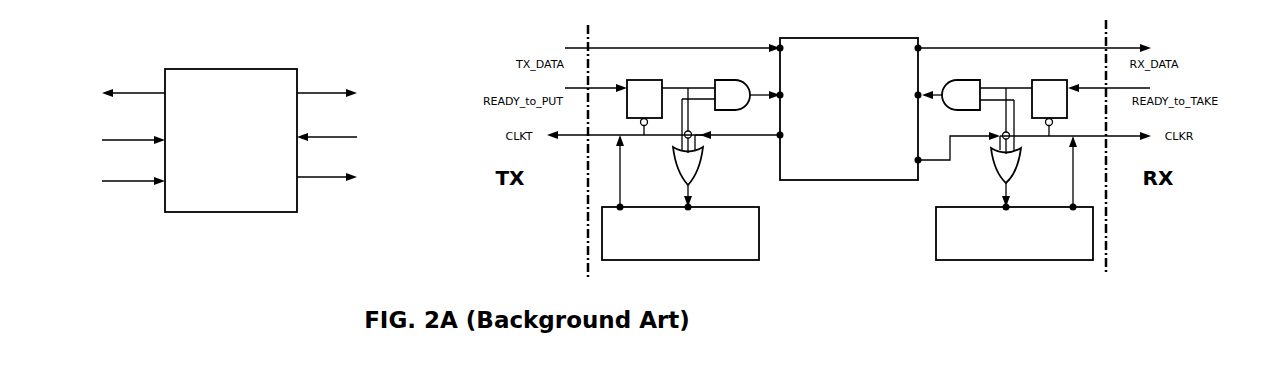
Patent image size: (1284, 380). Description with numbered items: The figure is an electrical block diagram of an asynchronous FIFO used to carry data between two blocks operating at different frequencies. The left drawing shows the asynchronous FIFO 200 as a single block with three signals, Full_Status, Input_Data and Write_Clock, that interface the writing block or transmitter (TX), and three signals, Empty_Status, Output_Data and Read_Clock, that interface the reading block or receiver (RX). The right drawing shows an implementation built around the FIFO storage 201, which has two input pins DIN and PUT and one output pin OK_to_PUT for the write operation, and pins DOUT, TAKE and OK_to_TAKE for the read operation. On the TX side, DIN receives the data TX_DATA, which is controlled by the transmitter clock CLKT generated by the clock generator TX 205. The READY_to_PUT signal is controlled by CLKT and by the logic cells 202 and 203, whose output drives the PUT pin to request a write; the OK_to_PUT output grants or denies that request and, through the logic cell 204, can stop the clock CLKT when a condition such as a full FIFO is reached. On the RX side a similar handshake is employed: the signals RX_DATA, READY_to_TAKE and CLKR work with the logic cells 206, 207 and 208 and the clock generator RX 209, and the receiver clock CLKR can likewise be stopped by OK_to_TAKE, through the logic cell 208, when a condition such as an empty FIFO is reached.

The asynchronous FIFO 200 is at (225, 62).
The FIFO storage 201 is at (811, 30).
The logic cell 202 is at (640, 77).
The logic cell 203 is at (729, 77).
The logic cell 204 is at (707, 170).
The clock generator TX 205 is at (768, 237).
The logic cell 206 is at (969, 77).
The logic cell 207 is at (1045, 75).
The logic cell 208 is at (987, 171).
The clock generator RX 209 is at (927, 237).